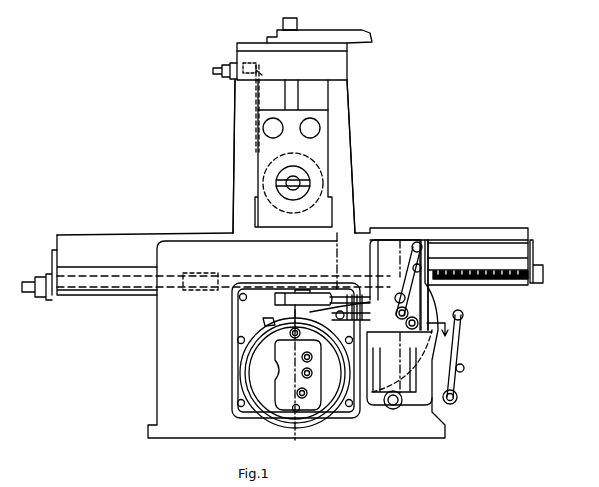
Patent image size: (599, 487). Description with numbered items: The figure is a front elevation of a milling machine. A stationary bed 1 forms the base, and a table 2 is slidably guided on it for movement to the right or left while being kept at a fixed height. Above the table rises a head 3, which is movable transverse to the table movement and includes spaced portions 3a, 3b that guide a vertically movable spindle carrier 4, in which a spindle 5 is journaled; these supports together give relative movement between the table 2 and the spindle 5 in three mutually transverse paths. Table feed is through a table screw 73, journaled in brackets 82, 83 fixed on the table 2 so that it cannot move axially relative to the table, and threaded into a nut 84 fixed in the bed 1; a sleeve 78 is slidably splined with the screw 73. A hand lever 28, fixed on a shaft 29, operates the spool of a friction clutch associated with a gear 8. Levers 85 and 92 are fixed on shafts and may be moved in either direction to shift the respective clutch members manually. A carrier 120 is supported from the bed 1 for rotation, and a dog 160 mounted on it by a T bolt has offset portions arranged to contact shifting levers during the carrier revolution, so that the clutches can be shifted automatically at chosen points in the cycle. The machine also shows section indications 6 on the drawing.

The bed 1 is at (157, 369).
The table 2 is at (142, 234).
The head 3 is at (352, 187).
The head portion 3a is at (350, 166).
The head portion 3b is at (233, 177).
The spindle carrier 4 is at (328, 240).
The spindle 5 is at (290, 179).
The section line 6- 6 is at (430, 355).
The gear 8 is at (391, 241).
The hand lever 28 is at (460, 337).
The shaft 29 is at (457, 393).
The table screw 73 is at (160, 296).
The sleeve 78 is at (397, 311).
The bracket 82 is at (52, 262).
The bracket 83 is at (540, 260).
The nut 84 is at (200, 274).
The lever 85 is at (418, 242).
The lever 92 is at (428, 263).
The carrier 120 is at (246, 392).
The dog 160 is at (268, 318).